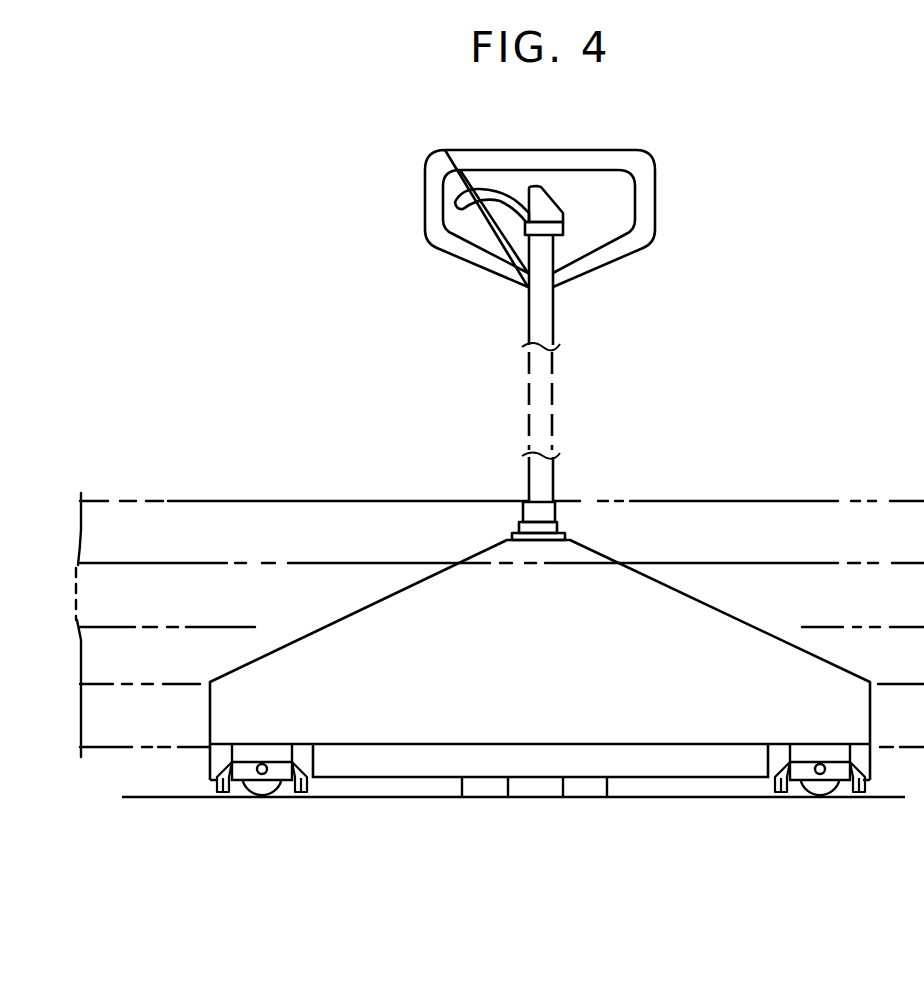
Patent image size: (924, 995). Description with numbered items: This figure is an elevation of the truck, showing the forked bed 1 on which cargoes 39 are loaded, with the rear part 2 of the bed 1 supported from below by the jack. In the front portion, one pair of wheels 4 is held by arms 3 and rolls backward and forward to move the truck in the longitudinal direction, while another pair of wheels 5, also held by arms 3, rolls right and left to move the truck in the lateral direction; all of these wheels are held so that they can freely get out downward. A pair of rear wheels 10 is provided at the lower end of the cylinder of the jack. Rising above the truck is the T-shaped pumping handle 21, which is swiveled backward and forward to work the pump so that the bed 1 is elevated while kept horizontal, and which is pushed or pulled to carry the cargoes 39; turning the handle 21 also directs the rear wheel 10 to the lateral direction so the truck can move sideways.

The forked bed 1 is at (412, 762).
The rear part of the bed 2 is at (683, 591).
The arms 3 is at (310, 783).
The wheels 4 is at (243, 790).
The wheels 5 is at (265, 782).
The rear wheels 10 is at (492, 785).
The T-shaped pumping handle 21 is at (545, 310).
The cargoes 39 is at (771, 498).